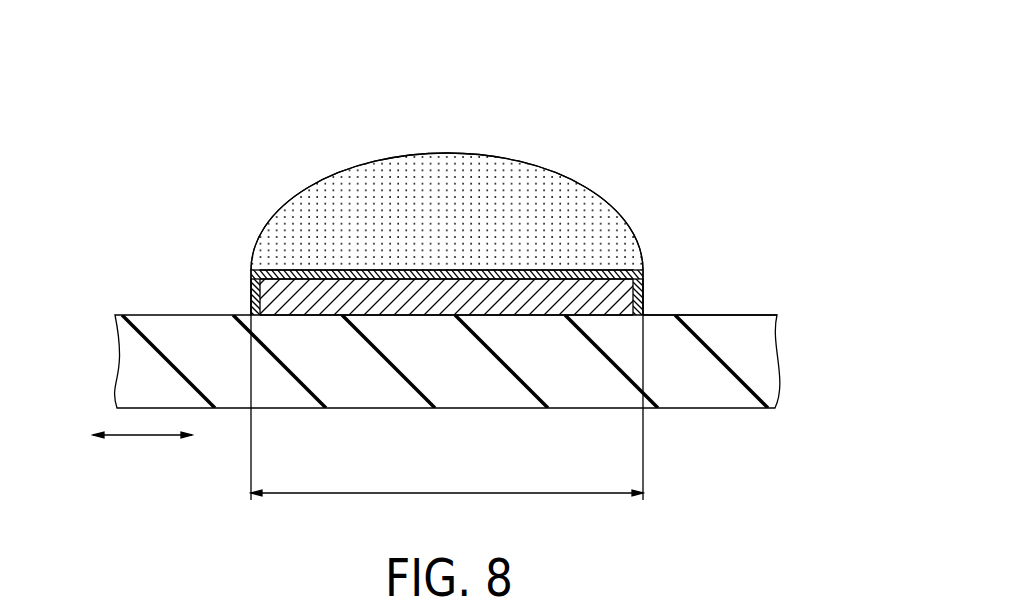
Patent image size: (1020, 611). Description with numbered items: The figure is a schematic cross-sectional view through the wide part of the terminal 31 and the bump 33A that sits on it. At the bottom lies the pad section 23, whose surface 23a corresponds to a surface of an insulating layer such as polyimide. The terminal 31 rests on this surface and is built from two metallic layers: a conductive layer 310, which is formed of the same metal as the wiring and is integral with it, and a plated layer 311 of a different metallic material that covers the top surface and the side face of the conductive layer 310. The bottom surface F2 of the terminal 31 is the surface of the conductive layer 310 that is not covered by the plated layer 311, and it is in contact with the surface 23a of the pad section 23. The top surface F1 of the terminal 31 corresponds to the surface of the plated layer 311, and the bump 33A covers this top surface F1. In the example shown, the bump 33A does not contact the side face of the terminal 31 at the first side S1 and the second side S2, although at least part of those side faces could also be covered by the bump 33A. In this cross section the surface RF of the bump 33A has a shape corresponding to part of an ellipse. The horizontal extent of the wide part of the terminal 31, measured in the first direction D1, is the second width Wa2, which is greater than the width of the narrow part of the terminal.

The pad section 23 is at (590, 407).
The surface of pad section 23a is at (750, 315).
The terminal 31 is at (449, 378).
The conductive layer 310 is at (357, 307).
The plated layer 311 is at (403, 275).
The bump 33A is at (542, 178).
The surface of bump RF is at (515, 158).
The top surface of terminal F1 is at (587, 271).
The bottom surface of terminal F2 is at (508, 315).
The first side S1 is at (250, 293).
The second side S2 is at (644, 293).
The first direction D1 is at (142, 451).
The second width Wa2 is at (447, 399).